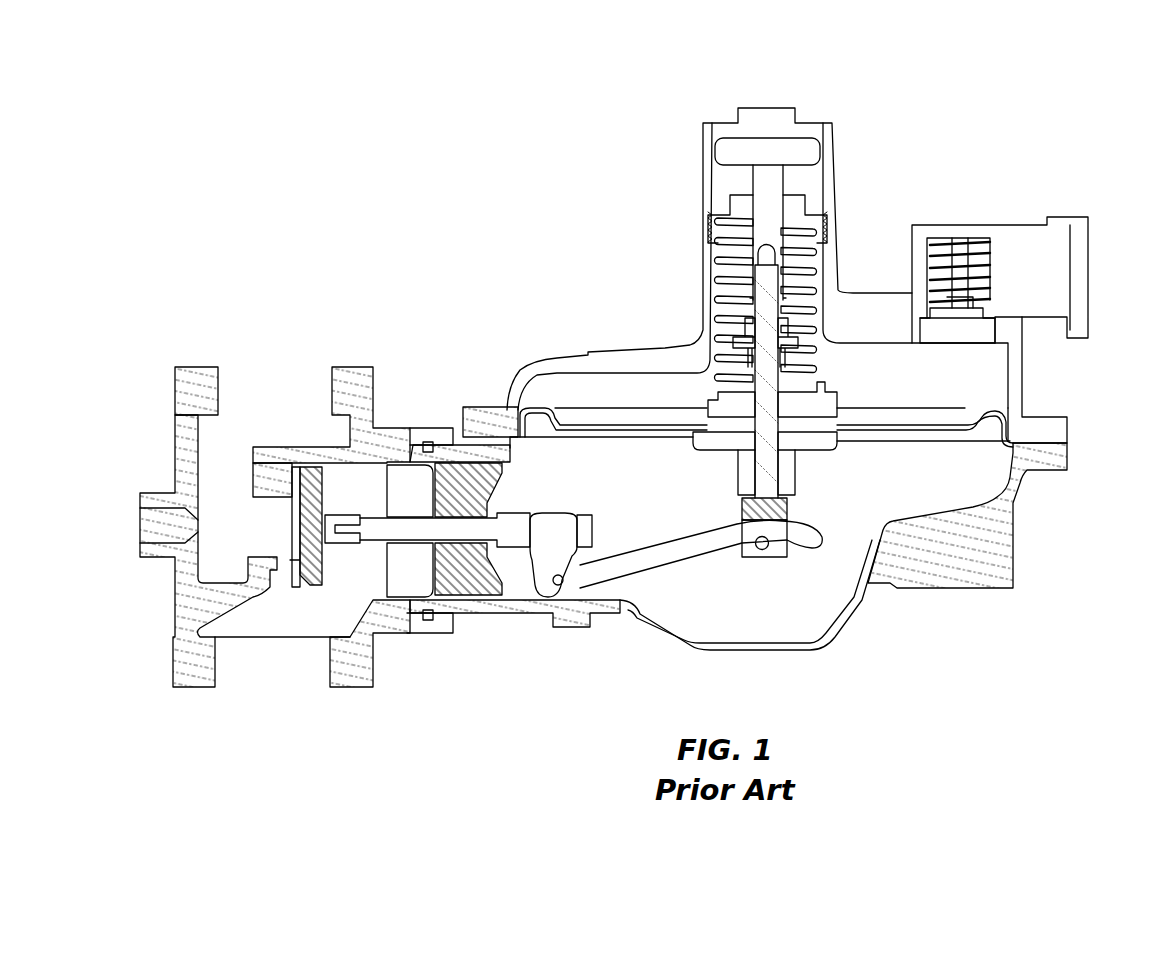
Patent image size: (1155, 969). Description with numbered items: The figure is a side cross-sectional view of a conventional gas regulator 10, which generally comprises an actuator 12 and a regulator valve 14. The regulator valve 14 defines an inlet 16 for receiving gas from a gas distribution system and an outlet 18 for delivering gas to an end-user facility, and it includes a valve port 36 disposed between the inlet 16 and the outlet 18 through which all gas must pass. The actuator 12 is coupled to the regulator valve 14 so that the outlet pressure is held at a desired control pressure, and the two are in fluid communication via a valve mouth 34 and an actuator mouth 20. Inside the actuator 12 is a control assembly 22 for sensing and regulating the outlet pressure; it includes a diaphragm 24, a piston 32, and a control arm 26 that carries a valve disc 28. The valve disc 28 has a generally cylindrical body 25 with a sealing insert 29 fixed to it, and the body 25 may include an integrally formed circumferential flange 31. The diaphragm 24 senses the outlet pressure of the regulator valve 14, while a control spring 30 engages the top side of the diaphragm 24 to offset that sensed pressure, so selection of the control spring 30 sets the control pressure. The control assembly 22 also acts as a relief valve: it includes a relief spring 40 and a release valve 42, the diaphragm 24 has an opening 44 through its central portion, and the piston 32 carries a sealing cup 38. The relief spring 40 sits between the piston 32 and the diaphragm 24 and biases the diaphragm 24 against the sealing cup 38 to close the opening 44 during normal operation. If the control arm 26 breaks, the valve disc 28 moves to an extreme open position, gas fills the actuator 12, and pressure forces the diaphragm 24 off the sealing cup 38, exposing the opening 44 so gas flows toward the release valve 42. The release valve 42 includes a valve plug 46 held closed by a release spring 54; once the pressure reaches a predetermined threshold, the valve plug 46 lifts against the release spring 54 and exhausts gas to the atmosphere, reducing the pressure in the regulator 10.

The gas regulator 10 is at (866, 100).
The actuator 12 is at (838, 243).
The regulator valve 14 is at (284, 533).
The inlet 16 is at (220, 387).
The outlet 18 is at (215, 673).
The actuator mouth 20 is at (468, 607).
The control assembly 22 is at (815, 465).
The diaphragm 24 is at (963, 415).
The body 25 is at (312, 585).
The control arm 26 is at (612, 580).
The valve disc 28 is at (308, 467).
The sealing insert 29 is at (248, 548).
The control spring 30 is at (737, 270).
The circumferential flange 31 is at (290, 482).
The piston 32 is at (763, 323).
The valve mouth 34 is at (390, 627).
The valve port 36 is at (263, 518).
The sealing cup 38 is at (697, 460).
The relief spring 40 is at (777, 358).
The release valve 42 is at (1028, 259).
The opening 44 is at (753, 415).
The valve plug 46 is at (977, 343).
The release spring 54 is at (990, 280).